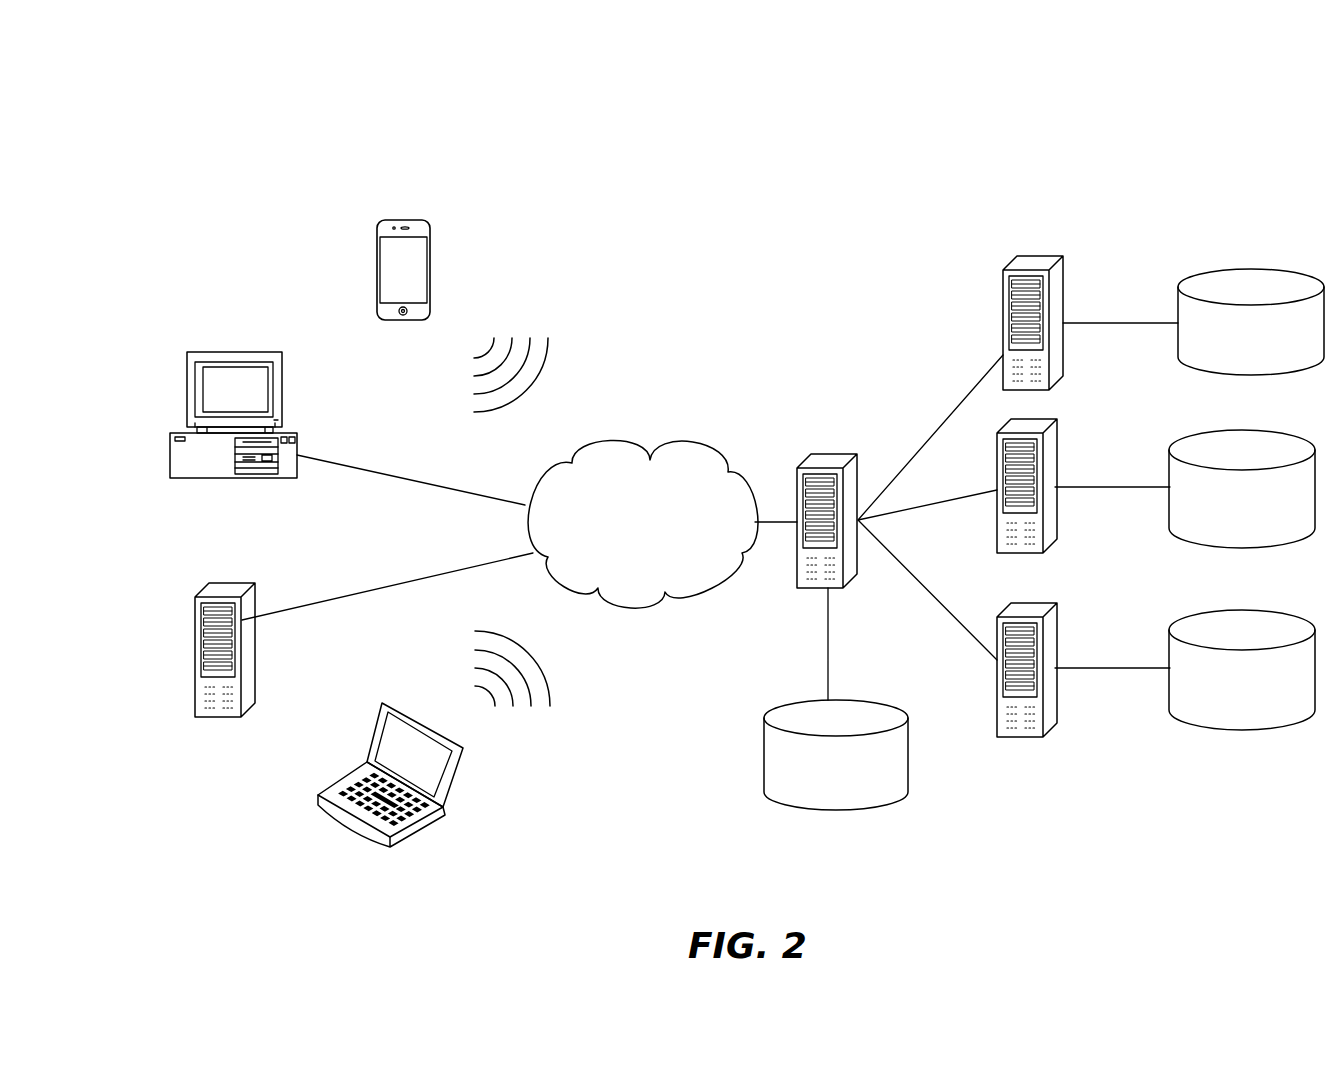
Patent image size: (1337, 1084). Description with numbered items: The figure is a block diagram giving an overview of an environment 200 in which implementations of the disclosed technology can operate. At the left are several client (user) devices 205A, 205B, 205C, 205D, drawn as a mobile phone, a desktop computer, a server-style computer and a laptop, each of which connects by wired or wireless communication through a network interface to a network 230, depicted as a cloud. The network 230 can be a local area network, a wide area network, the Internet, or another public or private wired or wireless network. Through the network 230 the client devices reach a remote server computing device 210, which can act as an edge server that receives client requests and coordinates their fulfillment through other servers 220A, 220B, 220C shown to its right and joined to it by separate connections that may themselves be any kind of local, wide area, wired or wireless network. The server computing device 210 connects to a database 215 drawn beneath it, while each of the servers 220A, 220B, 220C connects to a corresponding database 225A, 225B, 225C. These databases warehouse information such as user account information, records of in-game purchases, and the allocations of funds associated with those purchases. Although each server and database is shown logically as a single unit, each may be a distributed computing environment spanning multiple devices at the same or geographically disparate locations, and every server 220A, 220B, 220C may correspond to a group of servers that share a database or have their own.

The environment 200 is at (1115, 140).
The client device 205A is at (418, 219).
The client device 205B is at (275, 352).
The client device 205C is at (242, 580).
The client device 205D is at (457, 777).
The network 230 is at (695, 443).
The server computing device 210 is at (838, 452).
The database 215 is at (883, 702).
The server 220A is at (1062, 254).
The server 220B is at (1055, 419).
The server 220C is at (1055, 602).
The database 225A is at (1247, 268).
The database 225B is at (1237, 430).
The database 225C is at (1237, 612).